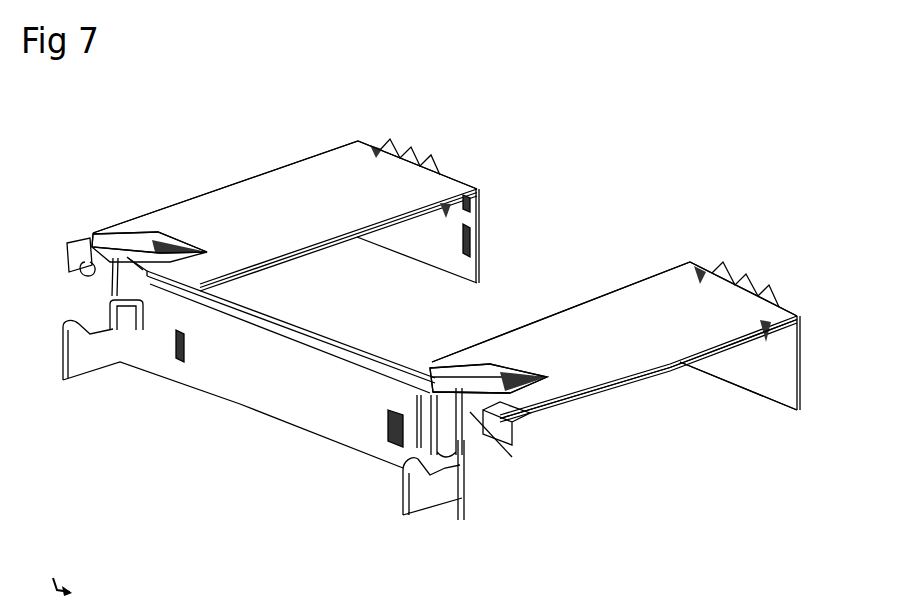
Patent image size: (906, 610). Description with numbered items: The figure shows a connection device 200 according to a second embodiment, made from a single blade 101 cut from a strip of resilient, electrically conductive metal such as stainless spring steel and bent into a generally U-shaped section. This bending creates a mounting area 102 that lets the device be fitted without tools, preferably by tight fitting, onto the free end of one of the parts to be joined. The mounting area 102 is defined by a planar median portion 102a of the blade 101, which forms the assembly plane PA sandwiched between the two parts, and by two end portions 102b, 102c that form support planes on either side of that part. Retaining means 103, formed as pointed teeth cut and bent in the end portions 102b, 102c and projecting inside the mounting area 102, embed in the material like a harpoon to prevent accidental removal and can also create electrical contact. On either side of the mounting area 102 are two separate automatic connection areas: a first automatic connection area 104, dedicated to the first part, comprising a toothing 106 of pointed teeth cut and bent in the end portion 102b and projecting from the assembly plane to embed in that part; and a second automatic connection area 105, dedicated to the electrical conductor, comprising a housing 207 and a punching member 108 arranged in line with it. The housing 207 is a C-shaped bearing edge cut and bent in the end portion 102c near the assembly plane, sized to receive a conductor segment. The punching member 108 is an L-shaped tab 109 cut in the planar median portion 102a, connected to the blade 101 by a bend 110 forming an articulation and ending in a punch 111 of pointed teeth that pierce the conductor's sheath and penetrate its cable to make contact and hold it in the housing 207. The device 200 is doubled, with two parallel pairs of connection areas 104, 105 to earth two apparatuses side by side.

The connection device 200 is at (578, 178).
The mounting area 102 is at (640, 473).
The planar median portion 102a is at (391, 251).
The end portion 102b is at (776, 380).
The end portion 102c is at (308, 386).
The blade 101 is at (687, 338).
The retaining means 103 is at (478, 243).
The first automatic connection area 104 is at (463, 148).
The second automatic connection area 105 is at (72, 210).
The toothing 106 is at (401, 156).
The punching member 108 is at (137, 237).
The L-shaped tab 109 is at (478, 380).
The bend 110 is at (570, 412).
The punch 111 is at (497, 440).
The housing 207 is at (120, 372).